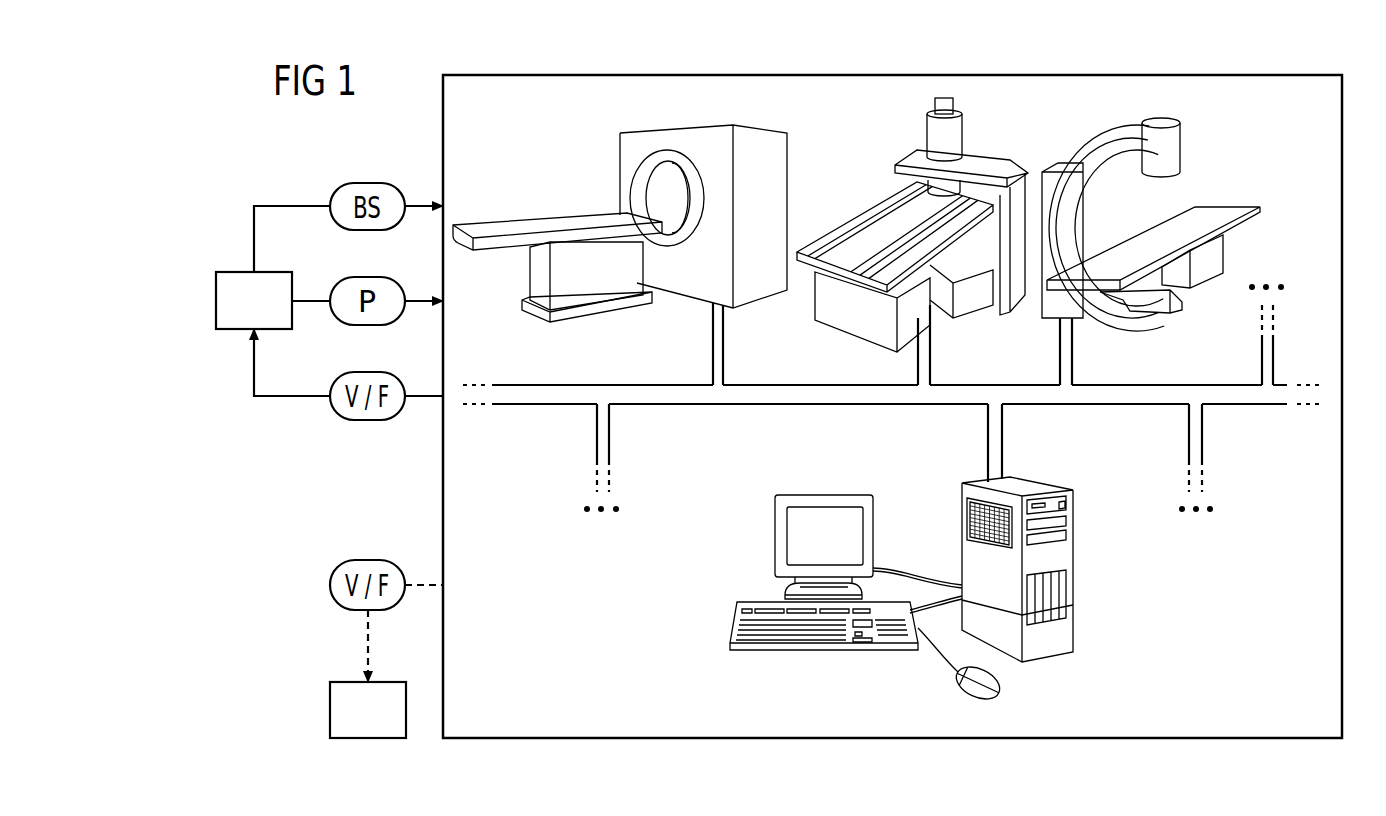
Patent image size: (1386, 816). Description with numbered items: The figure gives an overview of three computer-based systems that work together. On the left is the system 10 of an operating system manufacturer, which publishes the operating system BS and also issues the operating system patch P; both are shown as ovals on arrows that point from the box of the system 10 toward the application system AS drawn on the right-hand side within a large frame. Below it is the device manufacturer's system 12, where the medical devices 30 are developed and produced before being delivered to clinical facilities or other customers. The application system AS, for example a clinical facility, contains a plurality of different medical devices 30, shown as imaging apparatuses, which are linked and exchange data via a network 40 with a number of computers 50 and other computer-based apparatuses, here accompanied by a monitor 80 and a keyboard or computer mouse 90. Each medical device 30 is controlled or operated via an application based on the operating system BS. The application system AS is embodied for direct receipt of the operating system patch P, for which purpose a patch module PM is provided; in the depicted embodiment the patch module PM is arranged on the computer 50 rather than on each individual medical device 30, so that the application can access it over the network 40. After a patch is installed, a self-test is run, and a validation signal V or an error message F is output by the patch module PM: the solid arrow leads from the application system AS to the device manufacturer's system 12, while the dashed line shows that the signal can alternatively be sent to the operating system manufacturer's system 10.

The operating system manufacturer's system 10 is at (238, 272).
The device manufacturer's system 12 is at (330, 712).
The medical device 30 is at (795, 130).
The network 40 is at (665, 400).
The computer 50 is at (1015, 569).
The monitor 80 is at (792, 528).
The keyboard or computer mouse 90 is at (962, 688).
The application system AS is at (1112, 72).
The patch module PM is at (965, 527).